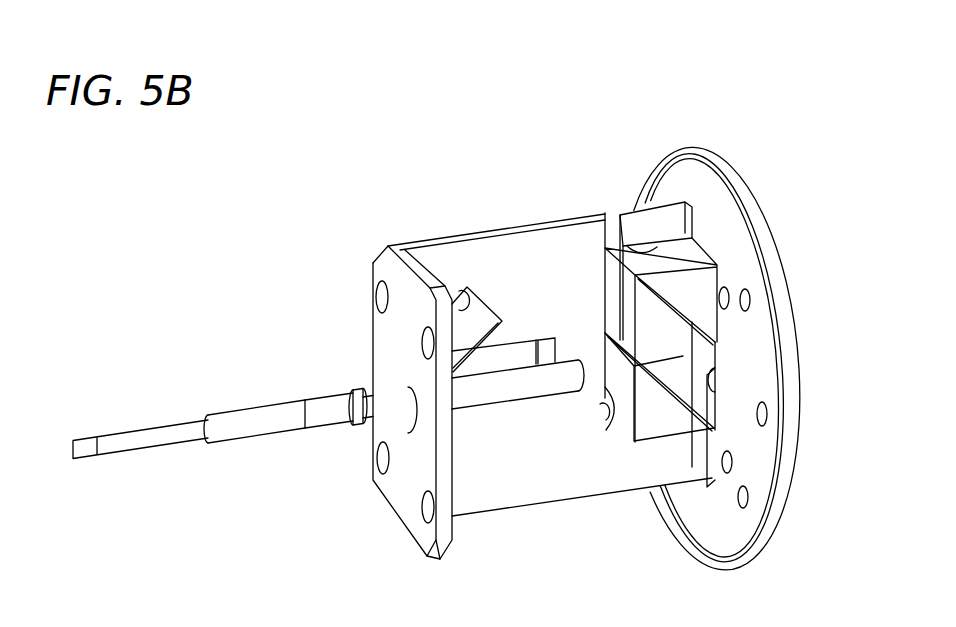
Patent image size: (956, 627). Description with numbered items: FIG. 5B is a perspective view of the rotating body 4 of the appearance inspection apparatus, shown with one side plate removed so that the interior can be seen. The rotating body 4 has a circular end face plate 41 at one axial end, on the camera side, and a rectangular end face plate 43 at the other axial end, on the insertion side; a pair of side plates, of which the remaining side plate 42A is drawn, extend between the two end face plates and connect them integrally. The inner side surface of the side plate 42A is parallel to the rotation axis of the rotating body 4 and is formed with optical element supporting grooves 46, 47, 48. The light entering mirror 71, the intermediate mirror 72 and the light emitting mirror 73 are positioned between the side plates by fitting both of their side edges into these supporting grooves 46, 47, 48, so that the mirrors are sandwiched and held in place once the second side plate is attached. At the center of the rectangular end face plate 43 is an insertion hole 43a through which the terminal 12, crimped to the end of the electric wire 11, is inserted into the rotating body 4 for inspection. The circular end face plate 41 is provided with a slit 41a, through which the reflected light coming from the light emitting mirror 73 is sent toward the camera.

The rotating body 4 is at (734, 155).
The electric wire 11 is at (178, 437).
The terminal 12 is at (519, 378).
The circular end face plate 41 is at (791, 341).
The slit 41a is at (716, 388).
The side plate 42A is at (558, 214).
The rectangular end face plate 43 is at (373, 349).
The insertion hole 43a is at (374, 428).
The optical element supporting groove 46 is at (457, 291).
The optical element supporting groove 47 is at (628, 245).
The optical element supporting groove 48 is at (618, 420).
The light entering mirror 71 is at (482, 299).
The intermediate mirror 72 is at (689, 257).
The light emitting mirror 73 is at (647, 423).